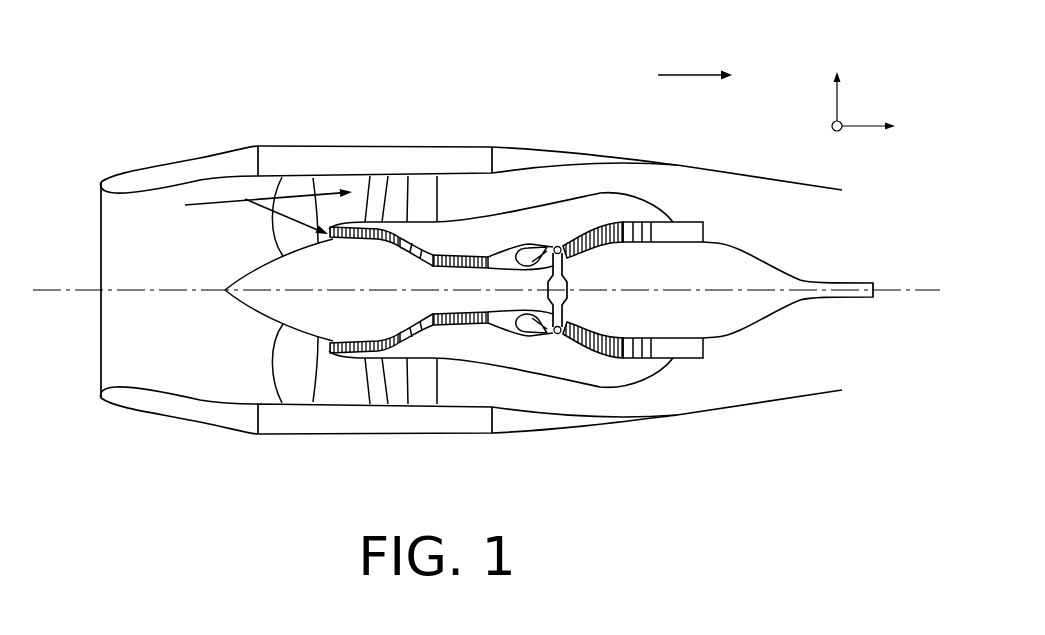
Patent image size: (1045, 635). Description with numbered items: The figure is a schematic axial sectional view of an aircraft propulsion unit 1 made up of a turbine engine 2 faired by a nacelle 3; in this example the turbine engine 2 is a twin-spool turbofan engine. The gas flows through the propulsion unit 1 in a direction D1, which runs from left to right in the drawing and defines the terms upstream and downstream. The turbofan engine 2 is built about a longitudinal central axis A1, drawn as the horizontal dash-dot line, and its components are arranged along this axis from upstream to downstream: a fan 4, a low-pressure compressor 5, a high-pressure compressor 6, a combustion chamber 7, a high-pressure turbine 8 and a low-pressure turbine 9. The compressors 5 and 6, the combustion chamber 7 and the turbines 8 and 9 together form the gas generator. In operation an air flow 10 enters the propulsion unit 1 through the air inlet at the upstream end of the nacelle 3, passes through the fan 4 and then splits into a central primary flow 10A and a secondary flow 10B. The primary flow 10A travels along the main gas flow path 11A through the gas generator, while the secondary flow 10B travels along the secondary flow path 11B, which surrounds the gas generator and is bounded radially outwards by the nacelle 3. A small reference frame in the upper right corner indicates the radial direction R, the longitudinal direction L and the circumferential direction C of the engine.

The aircraft propulsion unit 1 is at (190, 96).
The turbine engine 2 is at (736, 213).
The nacelle 3 is at (383, 155).
The fan 4 is at (285, 358).
The low-pressure compressor 5 is at (354, 213).
The high-pressure compressor 6 is at (471, 247).
The combustion chamber 7 is at (531, 237).
The high-pressure turbine 8 is at (584, 215).
The low-pressure turbine 9 is at (628, 209).
The air flow 10 is at (193, 196).
The central primary flow 10A is at (285, 216).
The secondary flow 10B is at (293, 193).
The main gas flow path 11A is at (420, 327).
The secondary flow path 11B is at (557, 400).
The longitudinal central axis A1 is at (45, 288).
The direction of gas flow D1 is at (693, 72).
The radial direction R is at (837, 82).
The longitudinal direction L is at (880, 127).
The circumferential direction C is at (827, 142).